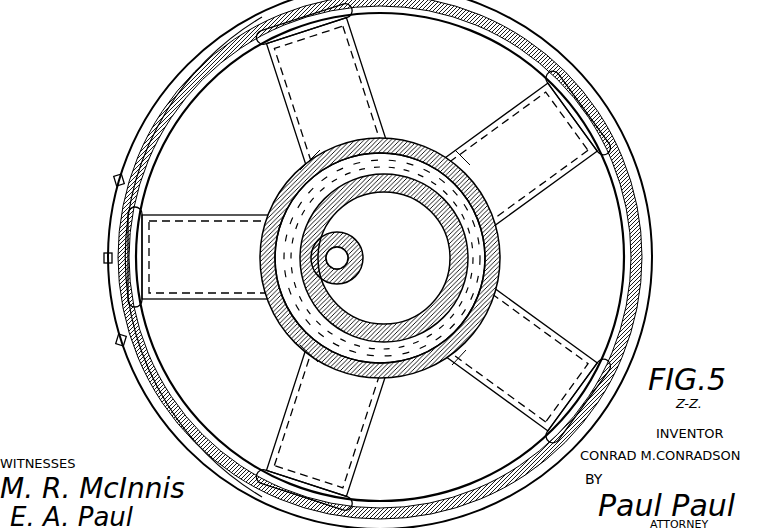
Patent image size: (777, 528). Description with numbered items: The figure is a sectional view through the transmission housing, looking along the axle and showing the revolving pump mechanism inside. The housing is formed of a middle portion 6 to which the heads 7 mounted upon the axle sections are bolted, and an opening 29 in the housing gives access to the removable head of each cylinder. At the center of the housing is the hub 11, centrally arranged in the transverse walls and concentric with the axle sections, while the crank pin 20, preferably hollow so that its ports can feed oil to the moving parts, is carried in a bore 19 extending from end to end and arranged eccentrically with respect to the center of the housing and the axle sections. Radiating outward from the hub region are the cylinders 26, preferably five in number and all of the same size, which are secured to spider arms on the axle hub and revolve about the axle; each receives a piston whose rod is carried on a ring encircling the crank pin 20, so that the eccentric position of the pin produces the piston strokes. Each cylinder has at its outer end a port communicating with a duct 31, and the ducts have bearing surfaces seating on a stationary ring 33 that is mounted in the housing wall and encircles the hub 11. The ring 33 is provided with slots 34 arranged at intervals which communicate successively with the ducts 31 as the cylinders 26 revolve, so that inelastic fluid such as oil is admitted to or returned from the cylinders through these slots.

The middle portion 6 is at (177, 98).
The heads 7 is at (607, 285).
The opening 29 is at (122, 215).
The cylinders 26 is at (290, 93).
The stationary ring 33 is at (470, 260).
The slots 34 is at (413, 160).
The duct 31 is at (378, 150).
The hub 11 is at (450, 268).
The shaft 19 is at (360, 258).
The crank pin 20 is at (340, 248).